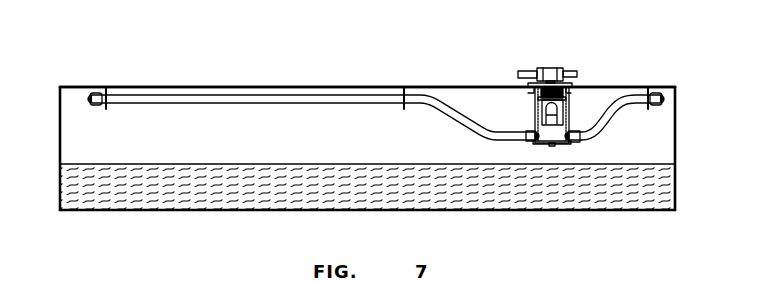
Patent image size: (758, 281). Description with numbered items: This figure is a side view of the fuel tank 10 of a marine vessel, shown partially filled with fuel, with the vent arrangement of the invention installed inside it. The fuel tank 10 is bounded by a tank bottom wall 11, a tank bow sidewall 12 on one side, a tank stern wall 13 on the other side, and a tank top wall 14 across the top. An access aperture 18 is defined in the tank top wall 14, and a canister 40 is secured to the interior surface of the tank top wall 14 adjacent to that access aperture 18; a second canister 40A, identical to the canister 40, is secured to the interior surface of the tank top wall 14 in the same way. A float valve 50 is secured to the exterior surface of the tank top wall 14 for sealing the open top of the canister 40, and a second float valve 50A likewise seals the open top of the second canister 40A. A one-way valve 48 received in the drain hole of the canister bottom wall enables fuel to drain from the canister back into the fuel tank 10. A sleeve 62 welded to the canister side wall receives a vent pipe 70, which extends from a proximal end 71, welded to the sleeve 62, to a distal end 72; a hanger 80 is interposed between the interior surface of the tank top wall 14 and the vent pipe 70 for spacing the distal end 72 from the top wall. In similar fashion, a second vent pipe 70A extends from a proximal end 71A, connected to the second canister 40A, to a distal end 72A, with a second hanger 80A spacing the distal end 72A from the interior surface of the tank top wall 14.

The fuel tank 10 is at (284, 86).
The tank bottom wall 11 is at (141, 212).
The tank bow sidewall 12 is at (59, 122).
The tank stern wall 13 is at (677, 143).
The tank top wall 14 is at (228, 86).
The second access aperture 18 is at (521, 85).
The canister 40 is at (555, 147).
The second canister 40A is at (563, 149).
The one-way valve 48 is at (550, 147).
The float valve 50 is at (541, 68).
The second float valve 50A is at (571, 68).
The sleeve 62 is at (533, 146).
The vent pipe 70 is at (337, 96).
The second vent pipe 70A is at (632, 97).
The proximal end 71 is at (515, 145).
The proximal end 71A is at (580, 147).
The distal end 72 is at (100, 95).
The distal end 72A is at (660, 94).
The hanger 80 is at (110, 91).
The second hanger 80A is at (652, 94).